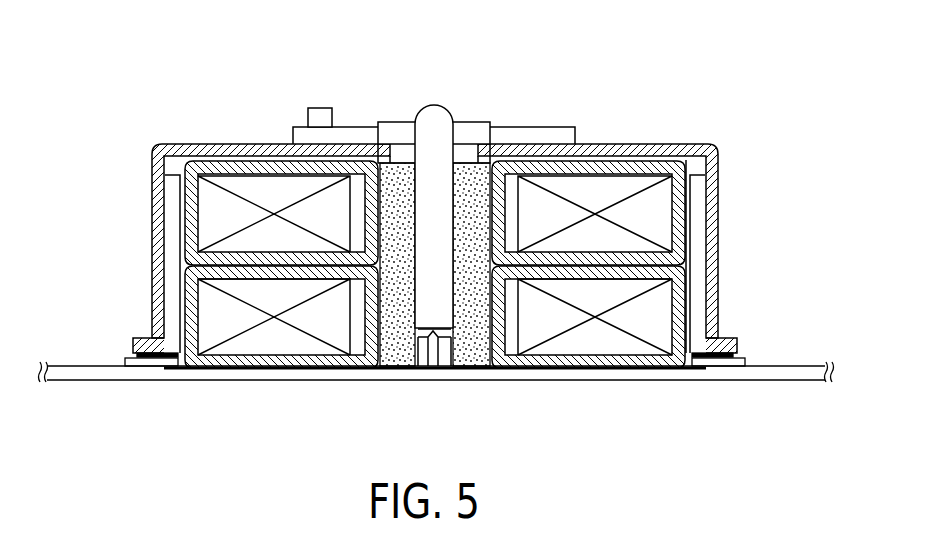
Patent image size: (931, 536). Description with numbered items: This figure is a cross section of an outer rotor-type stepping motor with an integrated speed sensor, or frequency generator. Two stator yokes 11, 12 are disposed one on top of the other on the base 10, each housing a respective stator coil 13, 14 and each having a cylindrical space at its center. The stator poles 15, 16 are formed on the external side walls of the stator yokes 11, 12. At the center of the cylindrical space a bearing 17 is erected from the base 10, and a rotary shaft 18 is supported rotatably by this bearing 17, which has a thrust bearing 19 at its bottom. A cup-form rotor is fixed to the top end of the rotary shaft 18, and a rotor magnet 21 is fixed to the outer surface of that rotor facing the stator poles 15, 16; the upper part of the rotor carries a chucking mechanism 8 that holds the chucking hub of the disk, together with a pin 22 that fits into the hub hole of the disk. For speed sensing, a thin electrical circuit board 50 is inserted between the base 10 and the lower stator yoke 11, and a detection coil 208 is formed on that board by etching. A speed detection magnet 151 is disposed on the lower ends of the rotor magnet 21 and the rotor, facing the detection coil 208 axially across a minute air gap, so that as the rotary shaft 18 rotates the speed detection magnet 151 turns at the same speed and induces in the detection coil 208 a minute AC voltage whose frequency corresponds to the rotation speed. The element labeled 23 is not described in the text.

The chucking mechanism 8 is at (397, 137).
The base 10 is at (810, 378).
The stator yoke 11 is at (732, 300).
The stator yoke 12 is at (732, 207).
The stator coil 13 is at (567, 345).
The stator coil 14 is at (587, 200).
The stator pole 15 is at (668, 323).
The stator pole 16 is at (678, 185).
The bearing 17 is at (402, 357).
The rotary shaft 18 is at (437, 125).
The thrust bearing 19 is at (437, 365).
The rotor magnet 21 is at (172, 186).
The pin 22 is at (318, 117).
The housing cover 23 is at (238, 142).
The electrical circuit board 50 is at (157, 364).
The speed detection magnet 151 is at (125, 365).
The detection coil 208 is at (168, 362).